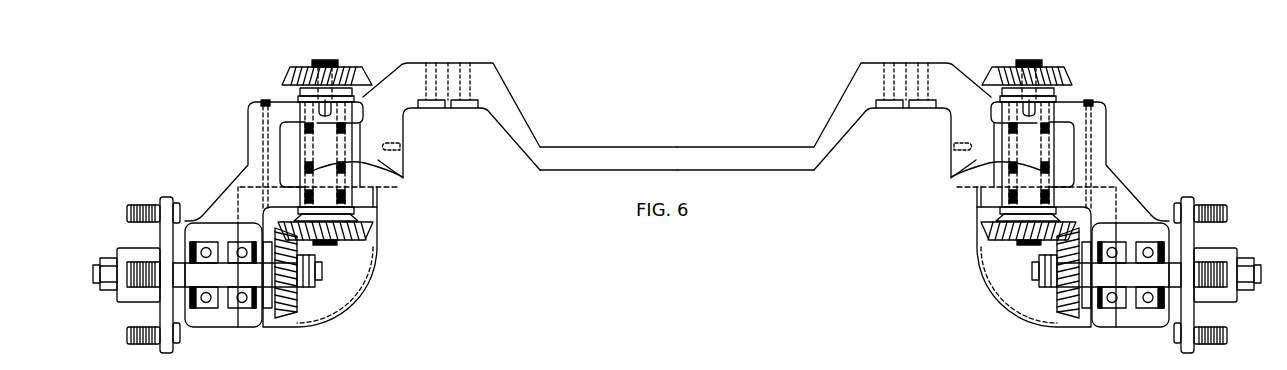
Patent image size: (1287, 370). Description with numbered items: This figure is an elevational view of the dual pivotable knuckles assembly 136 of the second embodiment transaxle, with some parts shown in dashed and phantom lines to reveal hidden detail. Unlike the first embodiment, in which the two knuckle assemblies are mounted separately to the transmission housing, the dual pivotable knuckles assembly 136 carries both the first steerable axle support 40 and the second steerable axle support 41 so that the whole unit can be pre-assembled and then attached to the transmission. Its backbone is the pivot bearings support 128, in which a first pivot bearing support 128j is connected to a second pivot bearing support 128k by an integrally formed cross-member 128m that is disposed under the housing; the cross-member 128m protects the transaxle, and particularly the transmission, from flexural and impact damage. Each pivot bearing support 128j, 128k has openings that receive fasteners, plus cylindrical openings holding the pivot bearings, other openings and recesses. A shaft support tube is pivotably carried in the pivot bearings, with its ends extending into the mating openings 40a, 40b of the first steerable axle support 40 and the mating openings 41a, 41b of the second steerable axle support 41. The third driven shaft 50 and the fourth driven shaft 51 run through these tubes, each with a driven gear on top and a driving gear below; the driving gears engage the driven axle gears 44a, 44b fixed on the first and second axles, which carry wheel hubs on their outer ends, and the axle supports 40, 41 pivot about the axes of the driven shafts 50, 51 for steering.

The dual pivotable knuckles assembly 136 is at (163, 99).
The pivot bearings support 128 is at (514, 101).
The first pivot bearing support 128j is at (381, 162).
The second pivot bearing support 128k is at (935, 175).
The cross-member 128m is at (677, 147).
The first steerable axle support 40 is at (240, 163).
The mating opening 40a is at (278, 126).
The mating opening 40b is at (307, 173).
The second steerable axle support 41 is at (1087, 161).
The mating opening 41a is at (1118, 154).
The mating opening 41b is at (1065, 183).
The third driven shaft 50 is at (342, 142).
The fourth driven shaft 51 is at (1008, 144).
The driven axle gear 44a is at (289, 316).
The driven axle gear 44b is at (1061, 298).